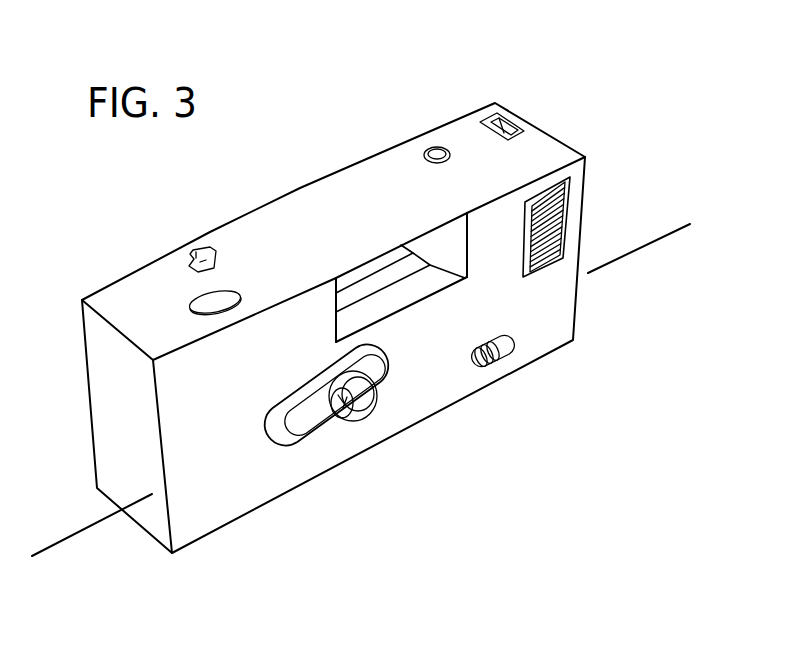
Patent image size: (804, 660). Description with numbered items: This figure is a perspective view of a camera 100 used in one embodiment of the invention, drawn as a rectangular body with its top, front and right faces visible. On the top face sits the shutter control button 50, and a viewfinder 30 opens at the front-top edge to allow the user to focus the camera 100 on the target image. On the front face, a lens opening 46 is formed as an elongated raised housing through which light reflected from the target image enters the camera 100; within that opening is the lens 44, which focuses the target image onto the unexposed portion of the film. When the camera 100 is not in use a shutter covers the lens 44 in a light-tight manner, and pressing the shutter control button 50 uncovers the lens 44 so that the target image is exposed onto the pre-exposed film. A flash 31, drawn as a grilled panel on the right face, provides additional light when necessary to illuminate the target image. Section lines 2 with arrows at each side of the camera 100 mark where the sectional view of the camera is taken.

The camera 100 is at (586, 156).
The viewfinder 30 is at (425, 243).
The flash 31 is at (566, 207).
The shutter control button 50 is at (195, 301).
The lens opening 46 is at (382, 398).
The lens 44 is at (340, 428).
The section lines 2— 2 is at (62, 530).